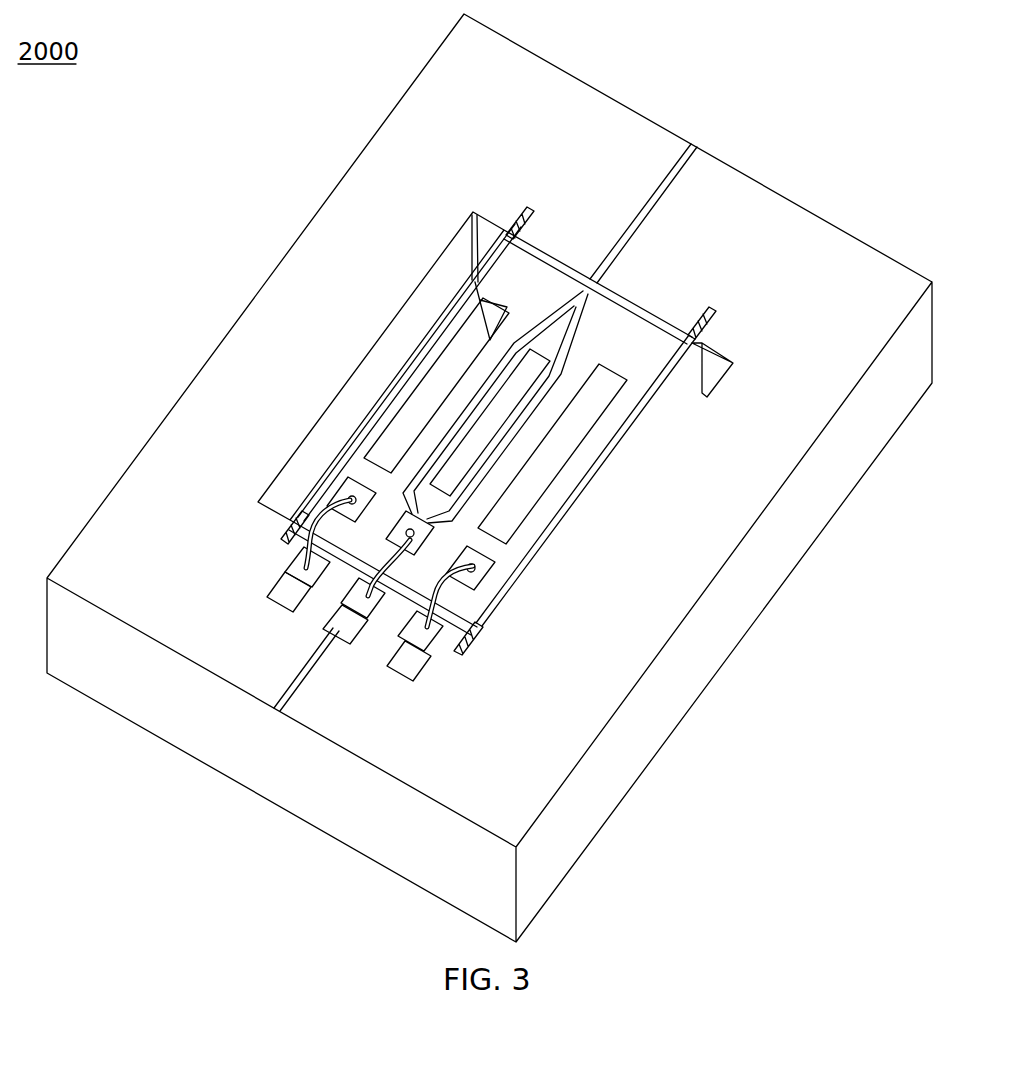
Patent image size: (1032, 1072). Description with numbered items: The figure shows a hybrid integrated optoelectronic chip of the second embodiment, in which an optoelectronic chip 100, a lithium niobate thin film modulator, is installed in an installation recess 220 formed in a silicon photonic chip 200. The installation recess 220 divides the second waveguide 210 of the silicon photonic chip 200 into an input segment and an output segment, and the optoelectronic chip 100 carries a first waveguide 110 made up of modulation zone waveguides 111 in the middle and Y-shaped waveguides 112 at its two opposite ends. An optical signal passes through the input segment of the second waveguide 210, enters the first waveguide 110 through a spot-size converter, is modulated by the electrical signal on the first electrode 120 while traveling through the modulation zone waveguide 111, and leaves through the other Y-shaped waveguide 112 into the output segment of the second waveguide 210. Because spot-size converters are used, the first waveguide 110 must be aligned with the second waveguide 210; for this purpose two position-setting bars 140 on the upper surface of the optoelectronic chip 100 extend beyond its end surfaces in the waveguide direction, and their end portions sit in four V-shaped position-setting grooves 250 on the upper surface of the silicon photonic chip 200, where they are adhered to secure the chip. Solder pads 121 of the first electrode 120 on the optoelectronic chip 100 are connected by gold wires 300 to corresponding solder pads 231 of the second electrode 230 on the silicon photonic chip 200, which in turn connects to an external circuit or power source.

The silicon photonic chip 200 is at (540, 78).
The second waveguide 210 is at (648, 217).
The optoelectronic chip 100 is at (678, 330).
The installation recess 220 is at (713, 355).
The first waveguide 110 is at (583, 153).
The modulation zone waveguide 111 is at (474, 215).
The Y-shaped waveguide 112 is at (540, 327).
The first electrode 120 is at (455, 345).
The solder pad 121 is at (350, 487).
The position-setting bar 140 is at (395, 388).
The position-setting groove 250 is at (298, 530).
The second electrode 230 is at (283, 590).
The solder pad 231 is at (290, 545).
The gold wire 300 is at (430, 598).